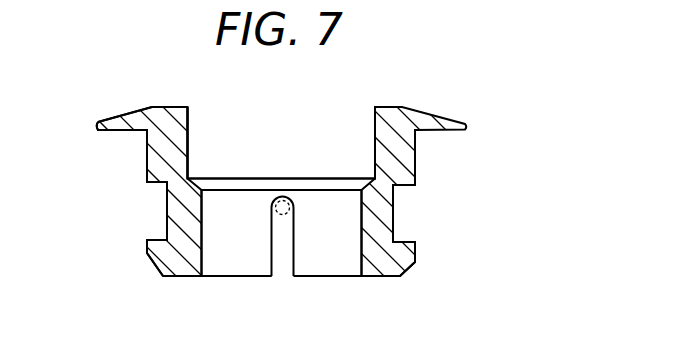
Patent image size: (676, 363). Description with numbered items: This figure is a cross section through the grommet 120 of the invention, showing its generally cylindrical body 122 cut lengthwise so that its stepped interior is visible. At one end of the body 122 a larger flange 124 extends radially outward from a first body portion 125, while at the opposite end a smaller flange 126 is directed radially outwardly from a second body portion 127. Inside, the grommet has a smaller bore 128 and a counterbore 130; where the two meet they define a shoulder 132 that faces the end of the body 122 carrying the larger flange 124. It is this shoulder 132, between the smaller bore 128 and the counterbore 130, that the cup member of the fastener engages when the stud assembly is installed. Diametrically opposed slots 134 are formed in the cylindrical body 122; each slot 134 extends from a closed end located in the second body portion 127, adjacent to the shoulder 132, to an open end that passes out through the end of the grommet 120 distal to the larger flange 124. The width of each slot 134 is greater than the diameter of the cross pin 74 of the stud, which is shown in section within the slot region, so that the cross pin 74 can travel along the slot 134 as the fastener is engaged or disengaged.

The grommet 120 is at (149, 90).
The larger flange 124 is at (116, 113).
The first body portion 125 is at (158, 147).
The cylindrical body 122 is at (137, 171).
The second body portion 127 is at (170, 213).
The smaller flange 126 is at (150, 252).
The smaller bore 128 is at (203, 264).
The slot 134 is at (275, 266).
The cross pin 74 is at (274, 212).
The shoulder 132 is at (372, 184).
The counterbore 130 is at (376, 117).